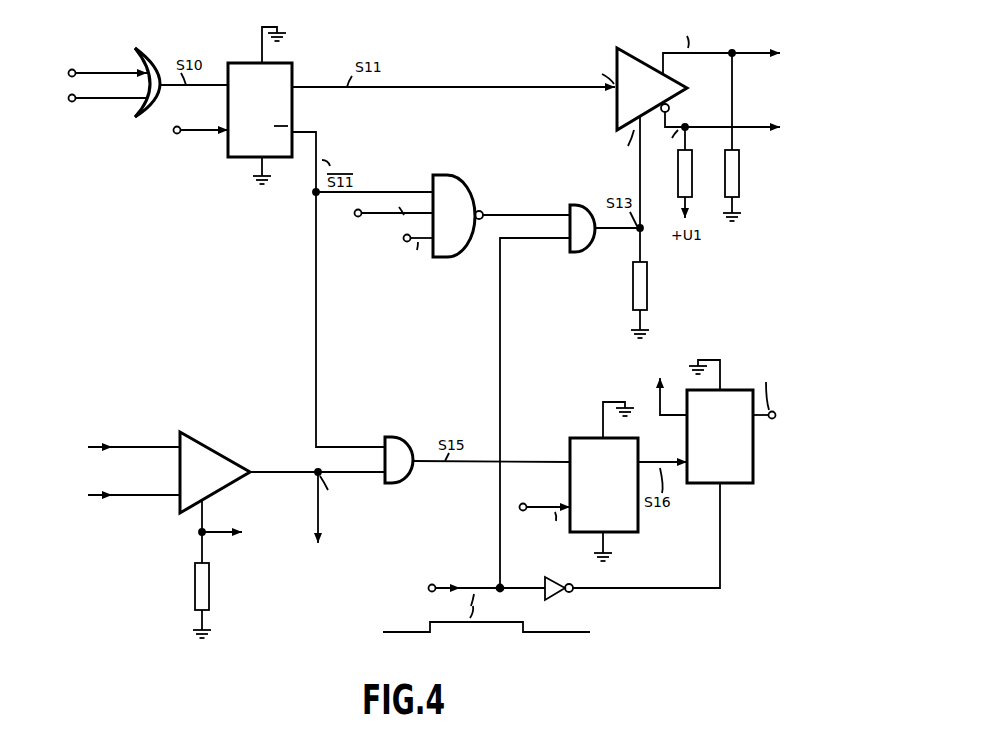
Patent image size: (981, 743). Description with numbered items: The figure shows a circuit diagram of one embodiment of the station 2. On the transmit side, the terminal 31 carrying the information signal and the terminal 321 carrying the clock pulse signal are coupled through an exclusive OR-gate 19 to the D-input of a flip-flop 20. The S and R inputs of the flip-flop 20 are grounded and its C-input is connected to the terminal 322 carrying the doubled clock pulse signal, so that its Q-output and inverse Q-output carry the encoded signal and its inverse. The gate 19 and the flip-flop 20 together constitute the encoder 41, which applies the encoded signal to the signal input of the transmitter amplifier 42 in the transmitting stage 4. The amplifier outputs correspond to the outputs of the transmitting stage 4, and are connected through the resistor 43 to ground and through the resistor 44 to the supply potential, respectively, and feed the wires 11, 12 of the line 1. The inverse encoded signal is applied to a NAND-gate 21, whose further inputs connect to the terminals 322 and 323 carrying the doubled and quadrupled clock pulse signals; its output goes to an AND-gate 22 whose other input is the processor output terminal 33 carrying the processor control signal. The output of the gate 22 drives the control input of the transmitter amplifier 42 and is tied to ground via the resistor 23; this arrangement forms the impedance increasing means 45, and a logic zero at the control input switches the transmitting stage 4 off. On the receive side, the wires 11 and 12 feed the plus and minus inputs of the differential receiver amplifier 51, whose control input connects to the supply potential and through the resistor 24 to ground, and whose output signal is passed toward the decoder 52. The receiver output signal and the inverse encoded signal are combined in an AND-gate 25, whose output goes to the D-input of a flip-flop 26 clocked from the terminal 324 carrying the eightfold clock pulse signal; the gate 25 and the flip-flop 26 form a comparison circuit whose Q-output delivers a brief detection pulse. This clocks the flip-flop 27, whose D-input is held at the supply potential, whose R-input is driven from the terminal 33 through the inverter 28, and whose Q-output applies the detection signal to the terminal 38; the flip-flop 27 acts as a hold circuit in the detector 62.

The terminal 321 is at (75, 72).
The terminal 31 is at (71, 101).
The exclusive OR-gate 19 is at (153, 124).
The flip-flop 20 is at (241, 159).
The terminal 322 is at (178, 129).
The encoder 41 is at (197, 208).
The transmitting stage 4 is at (480, 119).
The transmitter amplifier 42 is at (622, 46).
The transmission line 1 is at (434, 284).
The wire 11 is at (760, 48).
The wire 12 is at (753, 130).
The resistor 44 is at (677, 172).
The resistor 43 is at (739, 178).
The NAND-gate 21 is at (468, 250).
The AND-gate 22 is at (593, 250).
The resistor 23 is at (648, 288).
The impedance increasing means 45 is at (540, 318).
The terminal 323 is at (397, 250).
The receiver amplifier 51 is at (208, 448).
The resistor 24 is at (193, 594).
The decoder 52 is at (331, 522).
The AND-gate 25 is at (410, 480).
The flip-flop 26 is at (566, 450).
The terminal 324 is at (523, 503).
The flip-flop 27 is at (741, 484).
The terminal 38 is at (772, 420).
The inverter 28 is at (560, 594).
The processor output terminal 33 is at (432, 585).
The detector 62 is at (677, 573).
The station 2 is at (681, 655).